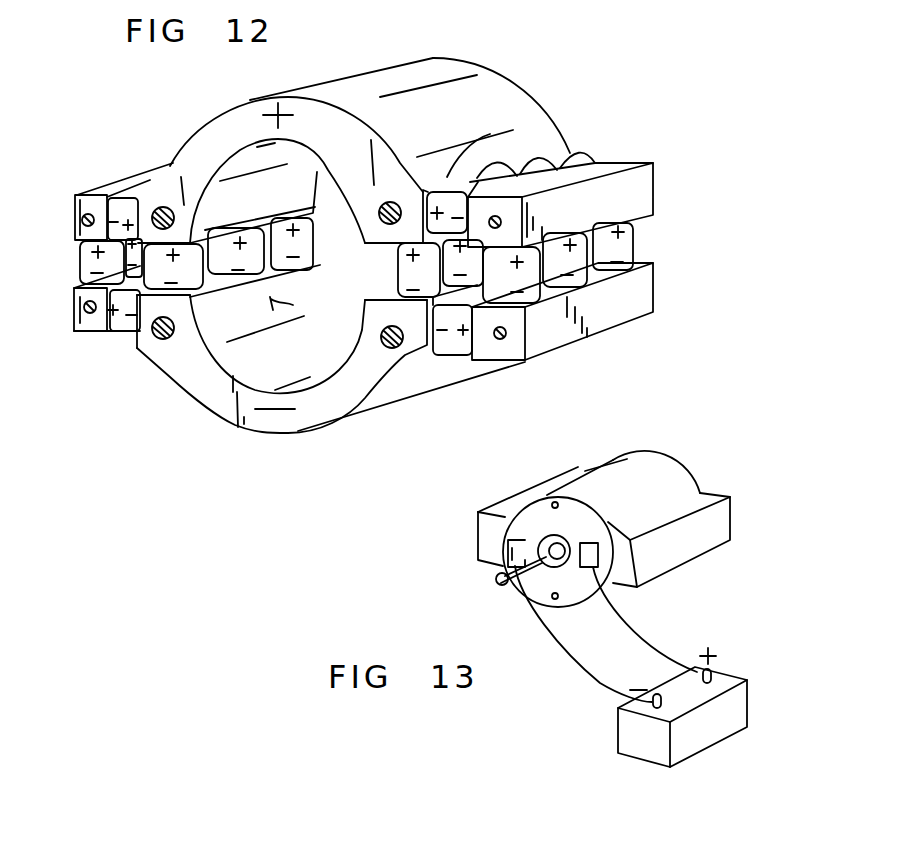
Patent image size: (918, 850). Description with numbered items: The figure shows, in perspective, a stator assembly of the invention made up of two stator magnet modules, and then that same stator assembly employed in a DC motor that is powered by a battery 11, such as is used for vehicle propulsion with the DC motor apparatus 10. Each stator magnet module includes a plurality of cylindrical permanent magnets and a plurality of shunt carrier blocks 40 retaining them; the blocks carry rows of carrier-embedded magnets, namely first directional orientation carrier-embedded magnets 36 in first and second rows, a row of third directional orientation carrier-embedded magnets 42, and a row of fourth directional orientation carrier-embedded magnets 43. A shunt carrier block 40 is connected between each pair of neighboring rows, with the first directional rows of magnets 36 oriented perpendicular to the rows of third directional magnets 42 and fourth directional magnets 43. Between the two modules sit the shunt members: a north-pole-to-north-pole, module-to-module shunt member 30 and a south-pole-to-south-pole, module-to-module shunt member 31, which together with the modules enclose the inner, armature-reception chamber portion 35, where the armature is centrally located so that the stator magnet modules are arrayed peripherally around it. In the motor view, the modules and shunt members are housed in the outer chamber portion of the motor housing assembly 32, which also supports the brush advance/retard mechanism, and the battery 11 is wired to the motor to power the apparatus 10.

In FIG. 13, the liquid cooled DC motor apparatus 10 is at (535, 638).
In FIG. 13, the battery 11 is at (748, 697).
In FIG. 12, the north-pole-to-north-pole, module-to-module shunt member 30 is at (324, 125).
In FIG. 12, the south-pole-to-south-pole, module-to-module shunt member 31 is at (298, 433).
In FIG. 13, the motor housing assembly 32 is at (595, 470).
In FIG. 12, the inner, armature-reception chamber portion 35 is at (270, 310).
In FIG. 12, the first directional orientation carrier-embedded magnets 36 is at (82, 262).
In FIG. 12, the shunt carrier block 40 is at (88, 200).
In FIG. 12, the third directional orientation carrier-embedded magnets 42 is at (130, 330).
In FIG. 12, the fourth directional orientation carrier-embedded magnets 43 is at (127, 202).